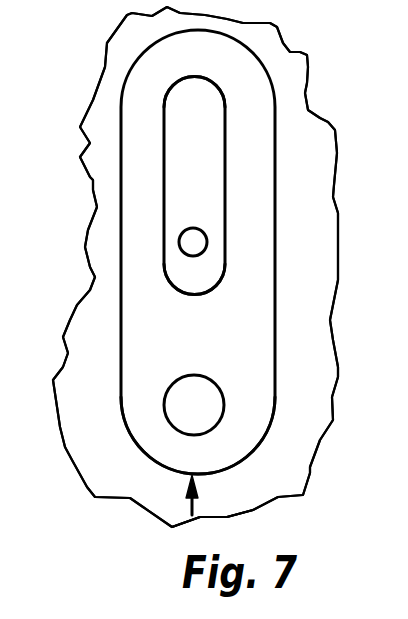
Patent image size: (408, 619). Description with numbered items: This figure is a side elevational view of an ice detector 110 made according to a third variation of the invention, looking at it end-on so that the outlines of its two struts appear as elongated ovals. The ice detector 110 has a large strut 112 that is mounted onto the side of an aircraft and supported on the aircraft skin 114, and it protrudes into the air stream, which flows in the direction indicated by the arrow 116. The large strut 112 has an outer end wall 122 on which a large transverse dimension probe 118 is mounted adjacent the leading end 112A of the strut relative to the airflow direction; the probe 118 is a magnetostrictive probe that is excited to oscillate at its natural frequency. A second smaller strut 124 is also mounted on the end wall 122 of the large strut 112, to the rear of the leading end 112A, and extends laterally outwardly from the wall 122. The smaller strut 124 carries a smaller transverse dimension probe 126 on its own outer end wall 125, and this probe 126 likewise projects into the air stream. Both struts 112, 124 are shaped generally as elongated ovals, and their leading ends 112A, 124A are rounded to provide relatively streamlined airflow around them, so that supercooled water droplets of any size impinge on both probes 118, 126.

The ice detector 110 is at (106, 241).
The strut 112 is at (130, 395).
The leading end 112A is at (225, 473).
The aircraft skin 114 is at (235, 505).
The arrow 116 is at (190, 507).
The probe 118 is at (215, 385).
The outer end wall 122 is at (130, 372).
The second smaller strut 124 is at (170, 288).
The leading end 124A is at (203, 293).
The outer end wall 125 is at (205, 155).
The probe 126 is at (192, 243).